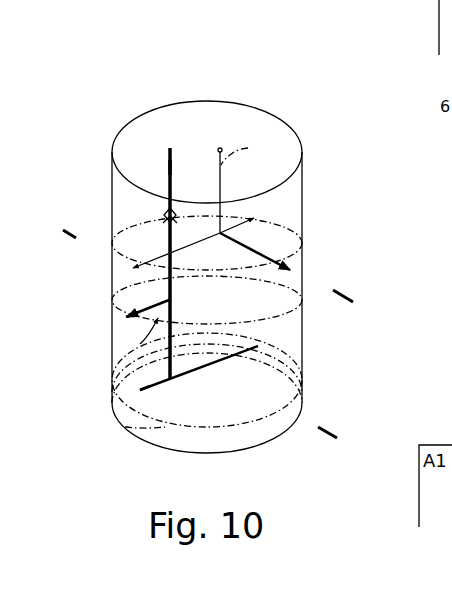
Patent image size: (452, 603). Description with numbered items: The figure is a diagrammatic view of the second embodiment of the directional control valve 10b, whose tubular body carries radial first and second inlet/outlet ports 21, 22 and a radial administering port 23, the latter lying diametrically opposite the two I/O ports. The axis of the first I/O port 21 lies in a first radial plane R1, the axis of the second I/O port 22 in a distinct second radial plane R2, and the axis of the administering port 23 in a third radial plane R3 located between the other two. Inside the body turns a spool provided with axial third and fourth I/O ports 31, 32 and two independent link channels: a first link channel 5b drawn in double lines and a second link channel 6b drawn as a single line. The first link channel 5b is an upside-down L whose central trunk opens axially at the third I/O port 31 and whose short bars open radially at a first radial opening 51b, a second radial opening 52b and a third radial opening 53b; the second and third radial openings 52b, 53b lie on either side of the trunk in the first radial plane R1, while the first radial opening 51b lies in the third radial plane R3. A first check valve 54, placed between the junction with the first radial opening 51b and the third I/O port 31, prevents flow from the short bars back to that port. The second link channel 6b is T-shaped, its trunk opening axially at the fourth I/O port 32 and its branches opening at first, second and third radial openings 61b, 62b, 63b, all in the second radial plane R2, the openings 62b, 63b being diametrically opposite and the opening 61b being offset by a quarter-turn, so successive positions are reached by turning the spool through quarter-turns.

The directional control valve 10b is at (258, 67).
The first inlet/outlet port 21 is at (324, 438).
The second inlet/outlet port 22 is at (348, 297).
The administering port 23 is at (83, 243).
The third inlet/outlet port 31 is at (170, 158).
The first check valve 54 is at (172, 212).
The first link channel 5b is at (170, 167).
The fourth inlet/outlet port 32 is at (222, 149).
The second link channel 6b is at (248, 148).
The third radial opening of second link channel 63b is at (257, 216).
The first radial opening of second link channel 61b is at (293, 269).
The second radial plane R2 is at (132, 266).
The second radial opening of second link channel 62b is at (132, 269).
The first radial opening of first link channel 51b is at (125, 318).
The third radial plane R3 is at (140, 344).
The third radial opening of first link channel 53b is at (260, 346).
The second radial opening of first link channel 52b is at (139, 391).
The first radial plane R1 is at (148, 428).